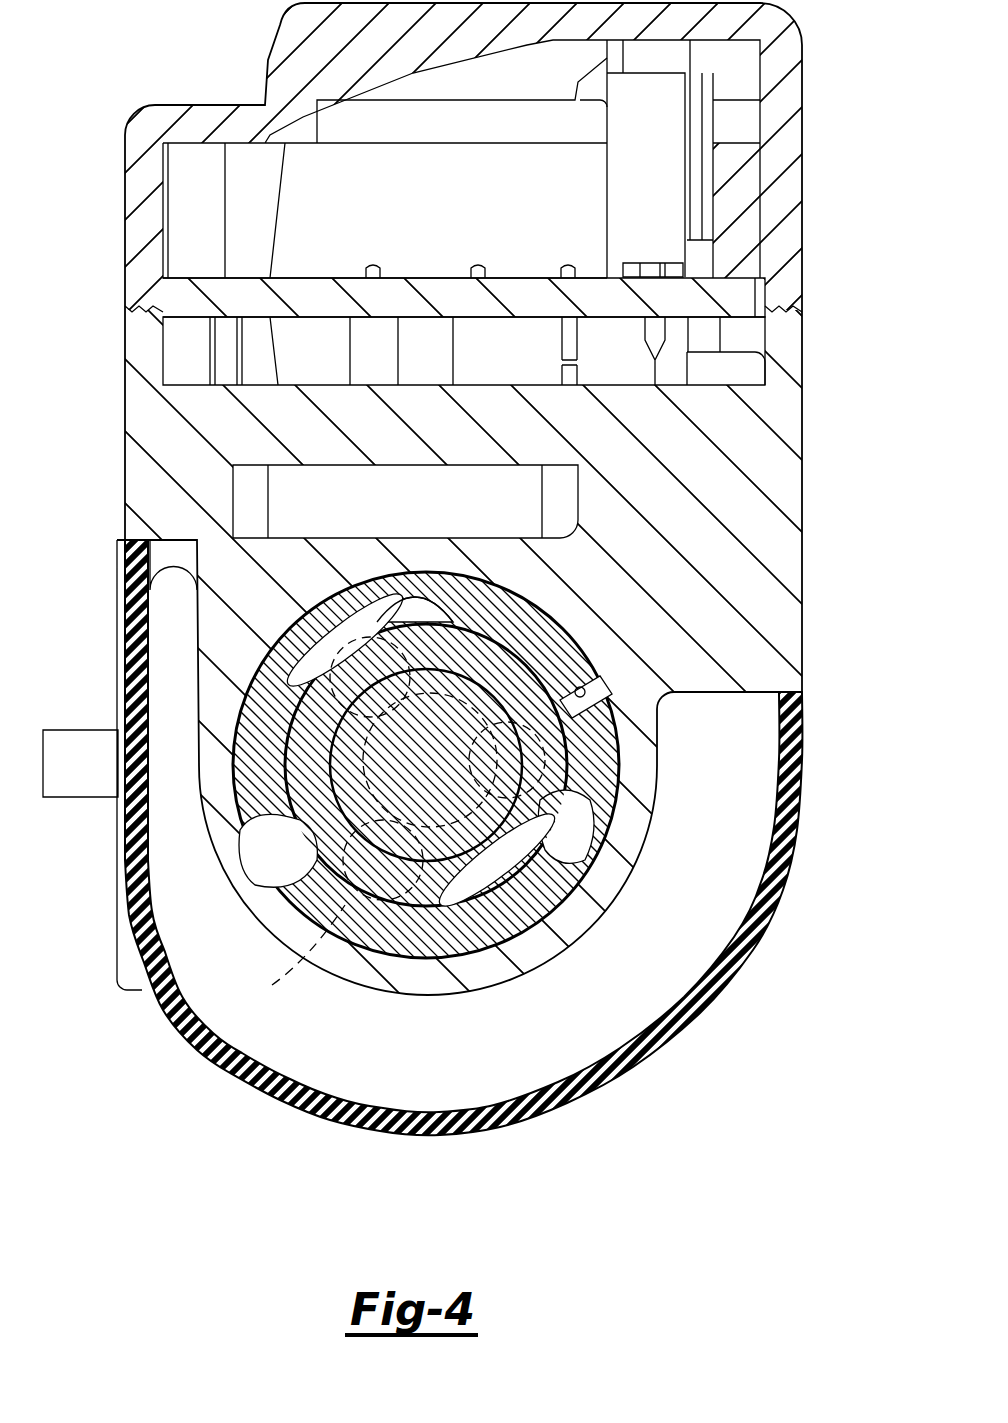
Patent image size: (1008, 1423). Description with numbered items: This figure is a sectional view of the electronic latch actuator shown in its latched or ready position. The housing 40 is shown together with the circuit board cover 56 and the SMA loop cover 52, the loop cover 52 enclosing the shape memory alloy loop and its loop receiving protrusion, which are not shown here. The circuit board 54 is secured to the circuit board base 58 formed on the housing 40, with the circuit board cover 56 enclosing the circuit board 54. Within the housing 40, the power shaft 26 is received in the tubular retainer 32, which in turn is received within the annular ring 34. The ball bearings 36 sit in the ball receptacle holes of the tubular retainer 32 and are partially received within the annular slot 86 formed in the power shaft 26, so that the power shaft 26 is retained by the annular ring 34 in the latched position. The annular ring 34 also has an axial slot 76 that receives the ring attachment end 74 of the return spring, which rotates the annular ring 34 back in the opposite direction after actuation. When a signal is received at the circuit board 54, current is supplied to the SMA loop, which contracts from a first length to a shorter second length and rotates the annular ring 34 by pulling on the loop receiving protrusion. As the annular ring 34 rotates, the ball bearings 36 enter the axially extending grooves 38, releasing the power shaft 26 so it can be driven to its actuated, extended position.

The power shaft 26 is at (437, 845).
The tubular retainer 32 is at (480, 880).
The annular ring 34 is at (611, 784).
The ball bearings 36 is at (272, 985).
The axially extending grooves 38 is at (560, 860).
The housing 40 is at (790, 565).
The loop cover 52 is at (720, 985).
The circuit board 54 is at (543, 292).
The circuit board cover 56 is at (207, 113).
The circuit board base 58 is at (310, 385).
The ring attachment end 74 is at (600, 690).
The axial slot 76 is at (606, 680).
The annular slot 86 is at (497, 582).